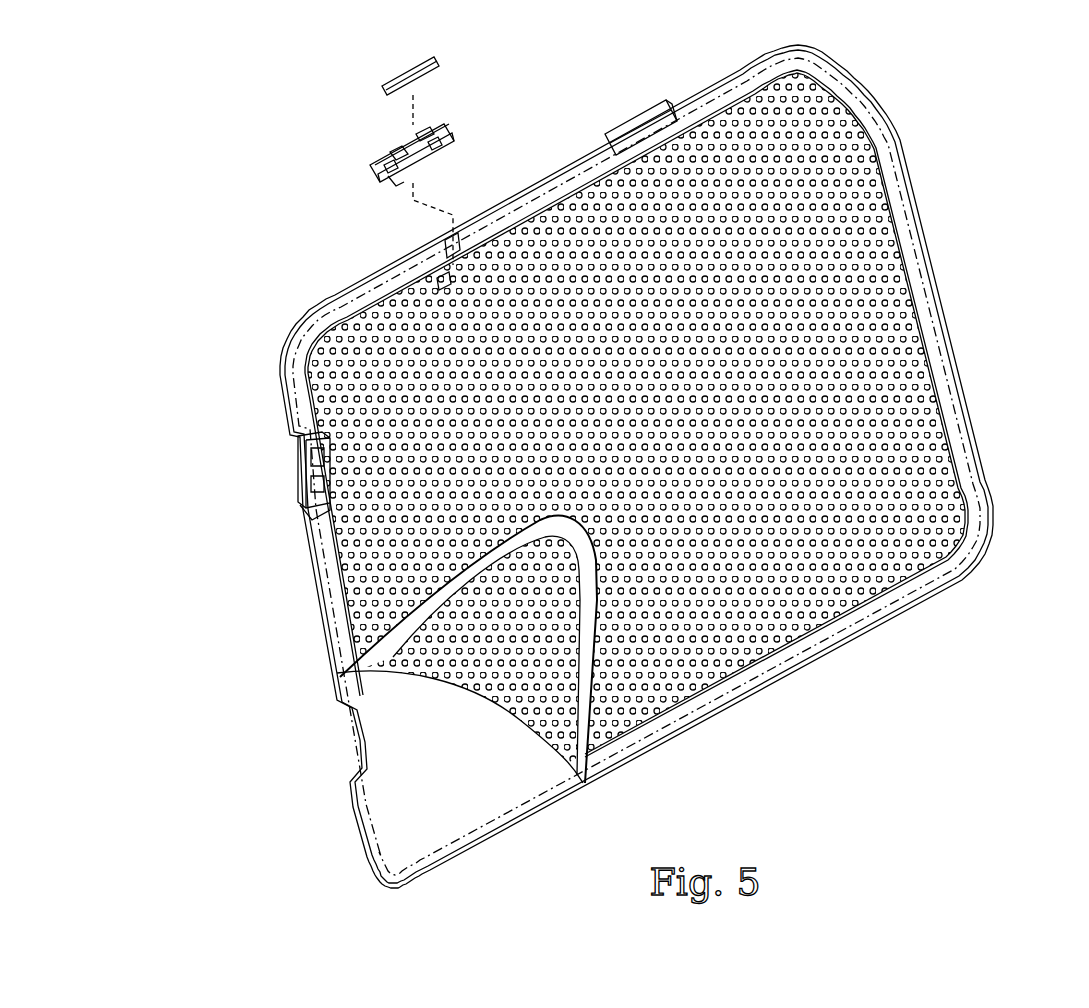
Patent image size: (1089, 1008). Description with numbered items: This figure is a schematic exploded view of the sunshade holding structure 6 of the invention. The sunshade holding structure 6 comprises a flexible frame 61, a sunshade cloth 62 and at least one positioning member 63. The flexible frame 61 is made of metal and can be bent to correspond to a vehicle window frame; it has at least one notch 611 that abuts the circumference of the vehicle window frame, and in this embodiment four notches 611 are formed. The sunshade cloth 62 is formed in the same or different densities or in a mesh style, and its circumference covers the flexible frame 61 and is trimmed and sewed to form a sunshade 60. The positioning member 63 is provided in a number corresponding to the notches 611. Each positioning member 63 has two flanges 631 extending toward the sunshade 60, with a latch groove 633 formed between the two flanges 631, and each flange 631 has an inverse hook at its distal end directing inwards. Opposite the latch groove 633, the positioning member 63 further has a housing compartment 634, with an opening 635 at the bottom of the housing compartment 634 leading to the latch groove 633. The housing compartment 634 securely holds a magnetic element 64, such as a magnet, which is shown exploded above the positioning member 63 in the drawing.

The sunshade holding structure 6 is at (602, 472).
The sunshade 60 is at (618, 475).
The flexible frame 61 is at (353, 810).
The notch 611 is at (395, 262).
The sunshade cloth 62 is at (880, 350).
The positioning member 63 is at (432, 137).
The flange 631 is at (383, 166).
The latch groove 633 is at (393, 182).
The housing compartment 634 is at (392, 150).
The opening 635 is at (420, 130).
The magnetic element 64 is at (392, 82).